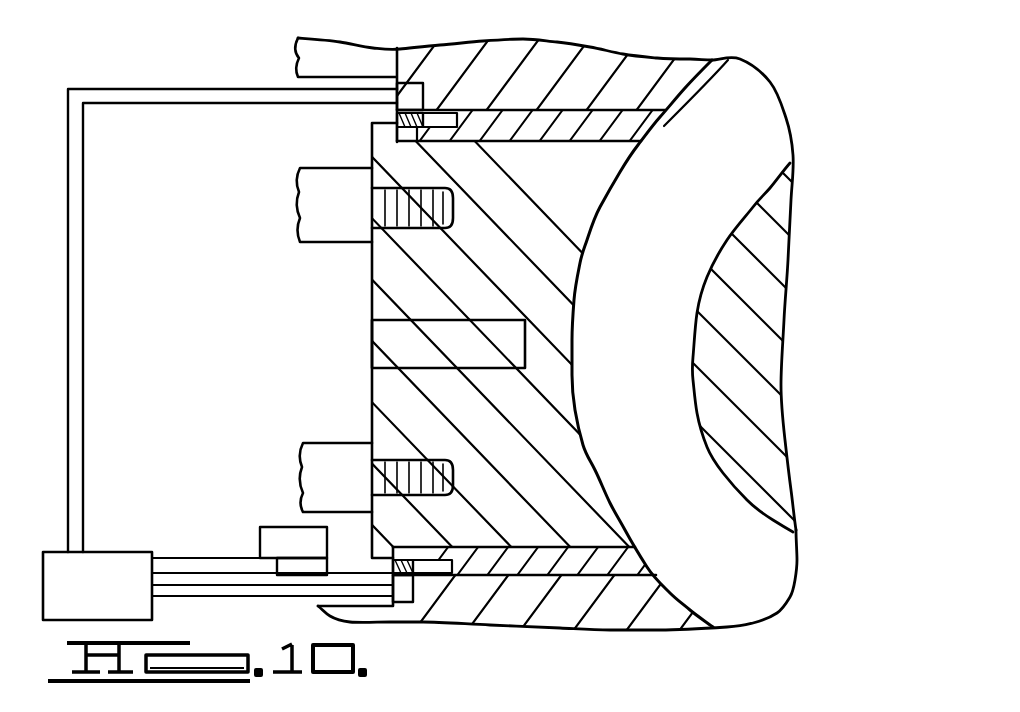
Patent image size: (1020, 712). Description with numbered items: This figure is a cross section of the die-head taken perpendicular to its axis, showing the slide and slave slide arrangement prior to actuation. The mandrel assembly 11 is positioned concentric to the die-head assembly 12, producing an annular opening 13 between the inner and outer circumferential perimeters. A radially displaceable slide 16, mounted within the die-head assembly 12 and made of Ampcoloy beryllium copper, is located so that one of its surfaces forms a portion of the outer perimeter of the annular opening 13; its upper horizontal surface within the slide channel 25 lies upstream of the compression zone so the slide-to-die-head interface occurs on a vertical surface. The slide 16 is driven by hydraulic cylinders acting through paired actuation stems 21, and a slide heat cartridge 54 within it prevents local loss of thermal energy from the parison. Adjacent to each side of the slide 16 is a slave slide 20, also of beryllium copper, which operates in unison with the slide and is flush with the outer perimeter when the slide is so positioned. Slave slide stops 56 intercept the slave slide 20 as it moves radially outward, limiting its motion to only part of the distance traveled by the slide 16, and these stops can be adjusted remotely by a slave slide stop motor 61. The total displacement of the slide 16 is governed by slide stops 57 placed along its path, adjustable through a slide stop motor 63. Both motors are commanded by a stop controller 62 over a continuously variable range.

The mandrel assembly 11 is at (767, 307).
The die-head assembly 12 is at (666, 68).
The annular opening 13 is at (780, 556).
The radially displaceable slide 16 is at (578, 223).
The slave slide 20 is at (541, 119).
The actuation stem 21 is at (307, 203).
The slide channel 25 is at (537, 567).
The slide heat cartridge 54 is at (383, 338).
The slave slide stop 56 is at (397, 118).
The slide stop 57 is at (272, 533).
The slave slide stop motor 61 is at (426, 98).
The stop controller 62 is at (110, 558).
The slide stop motor 63 is at (300, 565).